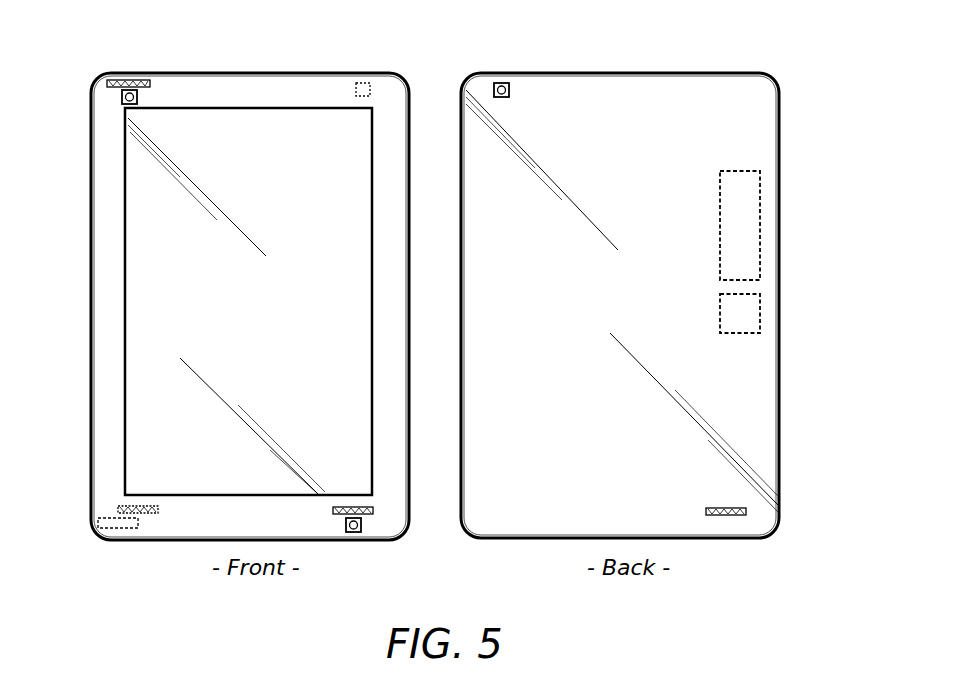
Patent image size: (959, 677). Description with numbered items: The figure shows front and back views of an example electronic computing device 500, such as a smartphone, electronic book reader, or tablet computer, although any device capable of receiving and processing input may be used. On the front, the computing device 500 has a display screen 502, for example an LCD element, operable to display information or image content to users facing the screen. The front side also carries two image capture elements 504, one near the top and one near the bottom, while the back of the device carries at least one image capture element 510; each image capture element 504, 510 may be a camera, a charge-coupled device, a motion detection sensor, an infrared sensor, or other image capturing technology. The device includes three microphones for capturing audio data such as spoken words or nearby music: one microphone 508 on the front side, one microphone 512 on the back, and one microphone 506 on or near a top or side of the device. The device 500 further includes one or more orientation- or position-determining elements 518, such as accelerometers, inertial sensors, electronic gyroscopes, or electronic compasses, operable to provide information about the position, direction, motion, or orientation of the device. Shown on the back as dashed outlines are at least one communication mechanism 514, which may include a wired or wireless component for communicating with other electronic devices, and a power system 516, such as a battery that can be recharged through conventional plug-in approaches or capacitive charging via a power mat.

The electronic computing device 500 is at (806, 78).
The display screen 502 is at (125, 222).
The image capture element 504 is at (120, 97).
The microphone 506 is at (138, 79).
The microphone 508 is at (366, 515).
The image capture element 510 is at (358, 82).
The microphone 512 is at (140, 514).
The communication mechanism 514 is at (760, 241).
The power system 516 is at (760, 314).
The orientation- or position-determining element 518 is at (116, 530).